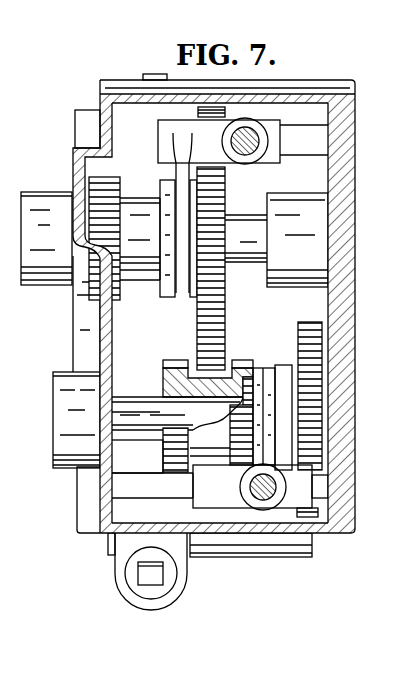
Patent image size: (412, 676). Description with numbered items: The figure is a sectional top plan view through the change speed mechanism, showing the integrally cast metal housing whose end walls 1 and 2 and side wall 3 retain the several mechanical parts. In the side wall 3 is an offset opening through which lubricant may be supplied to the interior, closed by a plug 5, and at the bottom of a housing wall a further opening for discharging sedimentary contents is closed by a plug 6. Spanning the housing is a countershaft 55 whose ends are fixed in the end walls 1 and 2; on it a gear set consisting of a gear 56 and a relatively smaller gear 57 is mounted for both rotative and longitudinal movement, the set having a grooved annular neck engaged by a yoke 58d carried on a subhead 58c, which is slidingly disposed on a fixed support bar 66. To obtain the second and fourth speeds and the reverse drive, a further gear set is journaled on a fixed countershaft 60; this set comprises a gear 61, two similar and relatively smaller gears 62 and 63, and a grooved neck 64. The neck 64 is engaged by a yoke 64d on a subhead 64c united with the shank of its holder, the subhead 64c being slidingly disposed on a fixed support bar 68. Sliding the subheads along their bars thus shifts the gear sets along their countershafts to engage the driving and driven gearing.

The end wall 1 is at (231, 292).
The end wall 2 is at (100, 343).
The side wall 3 is at (237, 533).
The plug 5 is at (152, 577).
The plug 6 is at (143, 77).
The countershaft 55 is at (246, 262).
The gear 56 is at (227, 321).
The gear 57 is at (121, 284).
The subhead 58c is at (212, 148).
The yoke 58d is at (182, 193).
The fixed countershaft 60 is at (123, 445).
The gear 61 is at (317, 343).
The gear 62 is at (175, 360).
The gear 63 is at (245, 362).
The grooved neck 64 is at (275, 366).
The subhead 64c is at (212, 508).
The yoke 64d is at (280, 422).
The fixed support bar 66 is at (305, 147).
The fixed support bar 68 is at (320, 487).